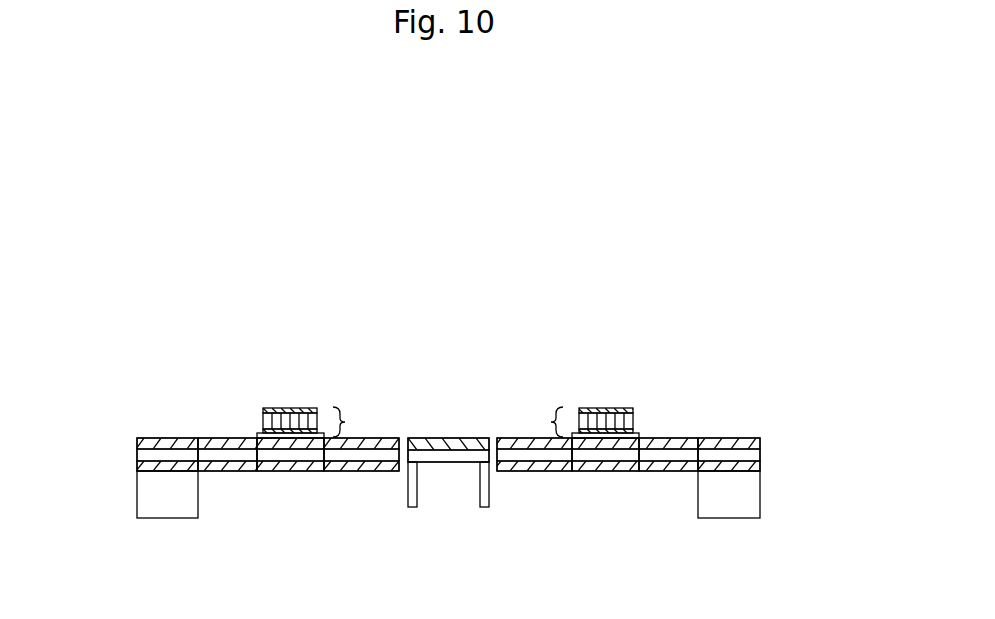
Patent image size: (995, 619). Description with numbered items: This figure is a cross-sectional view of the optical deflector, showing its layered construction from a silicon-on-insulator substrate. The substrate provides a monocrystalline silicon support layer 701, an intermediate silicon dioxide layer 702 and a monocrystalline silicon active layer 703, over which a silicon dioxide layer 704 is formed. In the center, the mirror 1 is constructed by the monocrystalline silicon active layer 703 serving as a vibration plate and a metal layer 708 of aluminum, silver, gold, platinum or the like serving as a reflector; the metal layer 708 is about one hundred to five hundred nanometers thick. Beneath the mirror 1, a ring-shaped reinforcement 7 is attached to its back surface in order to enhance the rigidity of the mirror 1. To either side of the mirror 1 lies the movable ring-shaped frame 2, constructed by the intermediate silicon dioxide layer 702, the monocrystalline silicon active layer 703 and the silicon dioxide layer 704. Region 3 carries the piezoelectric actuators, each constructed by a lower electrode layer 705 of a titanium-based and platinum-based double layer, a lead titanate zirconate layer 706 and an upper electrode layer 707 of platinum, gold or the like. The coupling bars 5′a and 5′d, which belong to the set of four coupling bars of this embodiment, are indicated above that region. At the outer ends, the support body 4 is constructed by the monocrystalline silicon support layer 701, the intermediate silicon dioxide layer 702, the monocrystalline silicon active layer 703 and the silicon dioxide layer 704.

The mirror 1 is at (407, 242).
The movable ring-shaped frame 2 is at (317, 242).
The third region 3 is at (262, 242).
The support body 4 is at (133, 242).
The coupling bar 5′a is at (229, 177).
The coupling bar 5′d is at (262, 242).
The ring-shaped reinforcement 7 is at (408, 523).
The monocrystalline silicon support layer 701 is at (137, 495).
The intermediate silicon dioxide layer 702 is at (137, 468).
The monocrystalline silicon active layer 703 is at (137, 455).
The silicon dioxide layer 704 is at (137, 443).
The lower electrode layer 705 is at (260, 438).
The PZT layer 706 is at (260, 433).
The upper electrode layer 707 is at (264, 427).
The metal layer 708 is at (430, 438).